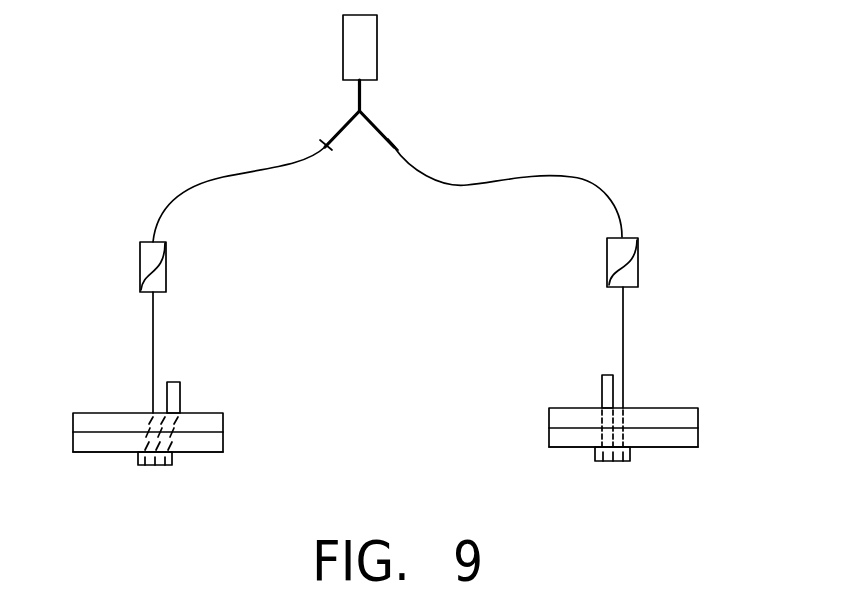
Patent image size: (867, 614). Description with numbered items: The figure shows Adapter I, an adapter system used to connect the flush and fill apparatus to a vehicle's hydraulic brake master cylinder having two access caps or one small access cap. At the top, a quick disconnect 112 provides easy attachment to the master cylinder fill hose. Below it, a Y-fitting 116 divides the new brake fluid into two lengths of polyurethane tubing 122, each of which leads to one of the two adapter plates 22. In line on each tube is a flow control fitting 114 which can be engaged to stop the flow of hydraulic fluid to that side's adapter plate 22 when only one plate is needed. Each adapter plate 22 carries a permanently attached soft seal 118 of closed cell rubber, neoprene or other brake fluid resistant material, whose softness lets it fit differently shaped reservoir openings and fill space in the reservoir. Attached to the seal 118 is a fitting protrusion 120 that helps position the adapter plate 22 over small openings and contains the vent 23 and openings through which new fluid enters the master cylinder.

The quick disconnect 112 is at (377, 35).
The Y-fitting 116 is at (360, 97).
The polyurethane tubing 122 is at (227, 177).
The flow control fitting 114 is at (140, 262).
The adapter plate 22 is at (85, 412).
The vent 23 is at (183, 387).
The seal 118 is at (85, 452).
The fitting protrusion 120 is at (165, 467).